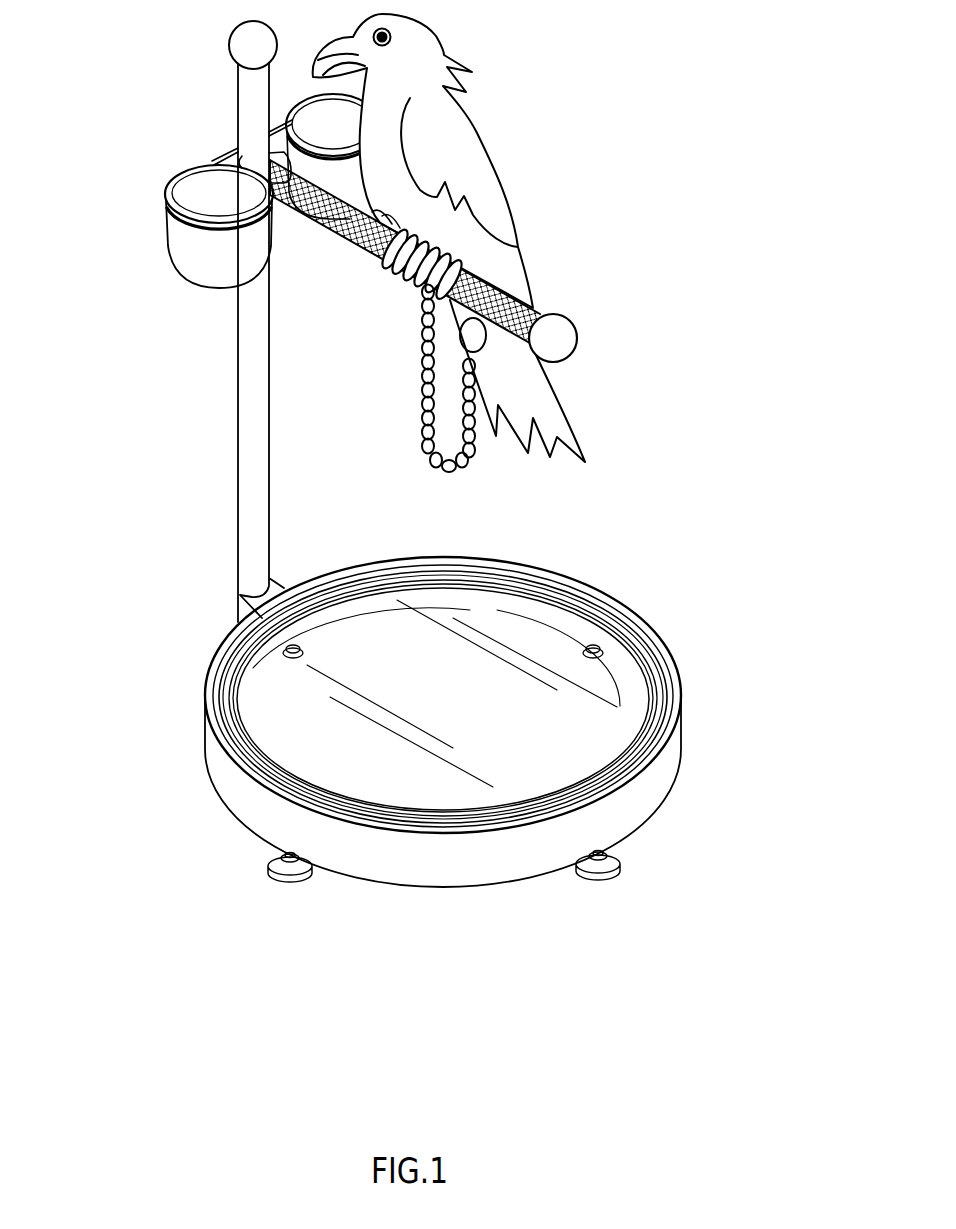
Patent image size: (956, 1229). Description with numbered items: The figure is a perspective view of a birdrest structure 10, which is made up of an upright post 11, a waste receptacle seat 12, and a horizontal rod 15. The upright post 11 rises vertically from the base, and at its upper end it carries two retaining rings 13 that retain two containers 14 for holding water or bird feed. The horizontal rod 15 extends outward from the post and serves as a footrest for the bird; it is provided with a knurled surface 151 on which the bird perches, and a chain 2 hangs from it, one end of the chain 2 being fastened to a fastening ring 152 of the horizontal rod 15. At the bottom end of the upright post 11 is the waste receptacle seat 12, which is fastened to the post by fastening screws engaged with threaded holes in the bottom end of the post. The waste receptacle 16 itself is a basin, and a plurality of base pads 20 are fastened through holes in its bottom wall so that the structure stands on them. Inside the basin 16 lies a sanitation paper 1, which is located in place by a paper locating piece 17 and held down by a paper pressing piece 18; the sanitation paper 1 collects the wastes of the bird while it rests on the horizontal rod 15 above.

The sanitation paper 1 is at (591, 597).
The chain 2 is at (428, 385).
The birdrest structure 10 is at (605, 237).
The upright post 11 is at (238, 458).
The waste receptacle seat 12 is at (510, 711).
The retaining ring 13 is at (230, 152).
The container 14 is at (203, 252).
The horizontal rod 15 is at (509, 261).
The knurled surface 151 is at (343, 240).
The fastening ring 152 is at (500, 287).
The waste receptacle 16 is at (656, 782).
The paper locating piece 17 is at (669, 711).
The paper pressing piece 18 is at (648, 672).
The base pad 20 is at (610, 880).